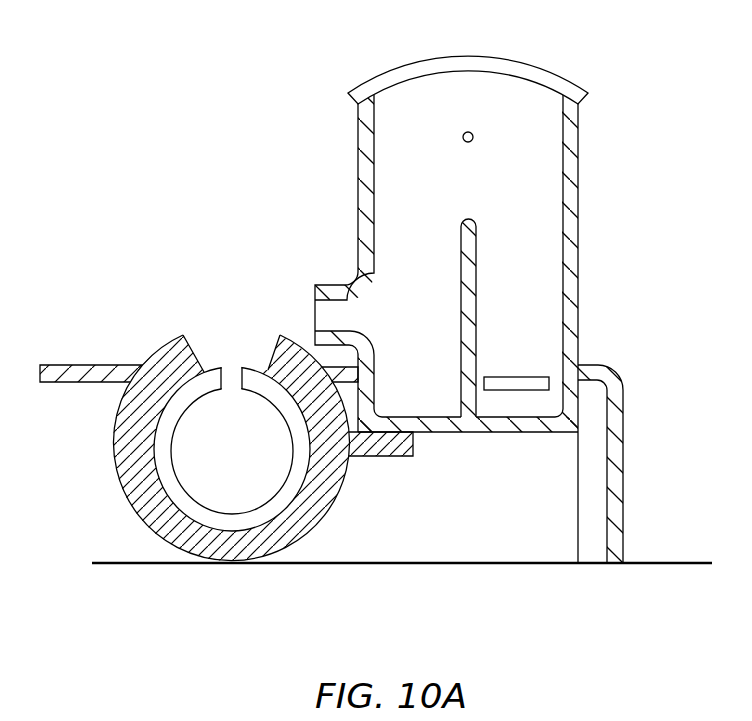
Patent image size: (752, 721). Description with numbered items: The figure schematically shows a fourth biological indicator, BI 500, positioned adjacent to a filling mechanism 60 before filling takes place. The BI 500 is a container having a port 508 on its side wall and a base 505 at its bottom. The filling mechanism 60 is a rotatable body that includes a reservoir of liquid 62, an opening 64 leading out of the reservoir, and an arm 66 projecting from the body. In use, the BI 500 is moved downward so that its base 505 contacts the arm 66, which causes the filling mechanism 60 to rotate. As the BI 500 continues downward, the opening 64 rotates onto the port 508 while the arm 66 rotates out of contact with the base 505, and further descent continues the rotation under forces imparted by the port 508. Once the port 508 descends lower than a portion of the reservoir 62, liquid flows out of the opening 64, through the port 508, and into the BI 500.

The biological indicator 500 is at (499, 290).
The port 508 is at (331, 284).
The base 505 is at (500, 433).
The filling mechanism 60 is at (249, 469).
The reservoir of liquid 62 is at (232, 484).
The opening 64 is at (232, 353).
The arm 66 is at (378, 457).